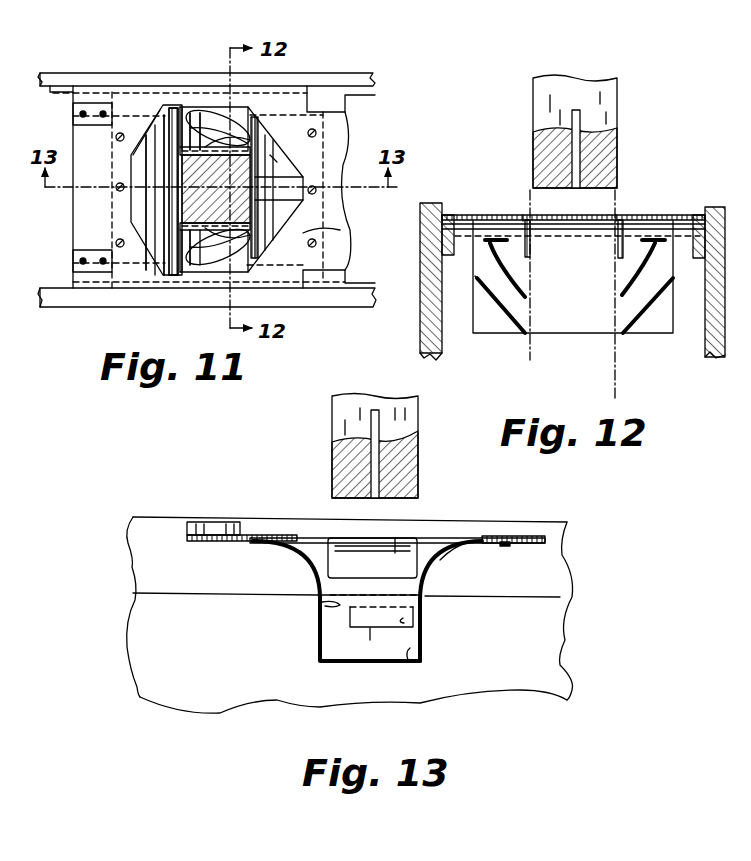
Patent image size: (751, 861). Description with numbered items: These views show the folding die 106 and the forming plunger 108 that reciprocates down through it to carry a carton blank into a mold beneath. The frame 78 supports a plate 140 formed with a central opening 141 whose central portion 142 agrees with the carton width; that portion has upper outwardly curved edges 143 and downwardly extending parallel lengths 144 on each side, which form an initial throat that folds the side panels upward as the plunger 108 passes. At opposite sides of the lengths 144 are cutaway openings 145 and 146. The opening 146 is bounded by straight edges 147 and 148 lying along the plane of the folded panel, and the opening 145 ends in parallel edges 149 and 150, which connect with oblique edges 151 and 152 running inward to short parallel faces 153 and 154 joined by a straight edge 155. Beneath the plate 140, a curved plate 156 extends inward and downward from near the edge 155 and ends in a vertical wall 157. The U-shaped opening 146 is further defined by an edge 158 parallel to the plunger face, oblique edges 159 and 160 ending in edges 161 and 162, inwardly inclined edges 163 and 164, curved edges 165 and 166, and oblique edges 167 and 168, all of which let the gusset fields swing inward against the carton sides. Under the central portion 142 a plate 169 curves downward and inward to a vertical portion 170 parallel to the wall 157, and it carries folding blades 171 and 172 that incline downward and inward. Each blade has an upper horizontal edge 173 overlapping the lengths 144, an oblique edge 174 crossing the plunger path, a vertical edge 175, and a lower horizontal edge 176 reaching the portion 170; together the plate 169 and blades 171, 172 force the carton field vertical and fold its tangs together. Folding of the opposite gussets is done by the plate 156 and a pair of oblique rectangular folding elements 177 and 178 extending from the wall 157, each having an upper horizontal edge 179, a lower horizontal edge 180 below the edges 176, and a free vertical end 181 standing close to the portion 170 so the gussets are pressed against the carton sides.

In FIG. 11, the frame 78 is at (335, 80).
In FIG. 11, the folding die 106 is at (298, 84).
In FIG. 11, the forming plunger 108 is at (240, 200).
In FIG. 12, the forming plunger 108 is at (608, 115).
In FIG. 13, the forming plunger 108 is at (405, 452).
In FIG. 11, the plate 140 is at (88, 205).
In FIG. 13, the plate 140 is at (212, 541).
In FIG. 11, the central opening 141 is at (303, 177).
In FIG. 13, the central opening 141 is at (450, 538).
In FIG. 11, the central portion of the opening 142 is at (285, 112).
In FIG. 12, the central portion of the opening 142 is at (618, 213).
In FIG. 12, the upper outwardly extending curved edge 143 is at (628, 218).
In FIG. 12, the downwardly extending parallel length 144 is at (612, 242).
In FIG. 13, the downwardly extending parallel length 144 is at (395, 553).
In FIG. 11, the cutaway opening 145 is at (145, 255).
In FIG. 12, the cutaway opening 145 is at (483, 214).
In FIG. 12, the cutaway opening 146 is at (665, 217).
In FIG. 11, the straight edge 147 is at (188, 125).
In FIG. 11, the straight edge 148 is at (180, 280).
In FIG. 11, the end edge 149 is at (178, 118).
In FIG. 11, the end edge 150 is at (172, 275).
In FIG. 11, the oblique edge 151 is at (150, 128).
In FIG. 11, the oblique edge 152 is at (155, 253).
In FIG. 11, the short parallel face 153 is at (128, 152).
In FIG. 11, the short parallel face 154 is at (130, 224).
In FIG. 11, the straight edge 155 is at (130, 173).
In FIG. 13, the curved plate 156 is at (297, 560).
In FIG. 13, the vertical wall 157 is at (320, 625).
In FIG. 11, the edge 158 is at (320, 190).
In FIG. 11, the oblique edge 159 is at (320, 233).
In FIG. 11, the oblique edge 160 is at (277, 162).
In FIG. 11, the edge 161 is at (240, 268).
In FIG. 11, the edge 162 is at (237, 107).
In FIG. 11, the inwardly inclined edge 163 is at (193, 262).
In FIG. 11, the inwardly inclined edge 164 is at (200, 130).
In FIG. 11, the curved edge 165 is at (185, 265).
In FIG. 11, the curved edge 166 is at (222, 110).
In FIG. 11, the oblique edge 167 is at (219, 247).
In FIG. 11, the oblique edge 168 is at (219, 128).
In FIG. 12, the plate 169 is at (640, 334).
In FIG. 13, the plate 169 is at (467, 548).
In FIG. 13, the vertical portion 170 is at (426, 637).
In FIG. 12, the folding blade 171 is at (640, 270).
In FIG. 13, the folding blade 171 is at (420, 618).
In FIG. 12, the folding blade 172 is at (500, 248).
In FIG. 13, the upper horizontal edge 173 is at (405, 564).
In FIG. 13, the oblique edge 174 is at (410, 595).
In FIG. 13, the vertical edge 175 is at (350, 628).
In FIG. 13, the horizontal edge 176 is at (375, 632).
In FIG. 12, the folding element 177 is at (655, 302).
In FIG. 12, the folding element 178 is at (510, 322).
In FIG. 12, the upper horizontal edge 179 is at (474, 278).
In FIG. 13, the upper horizontal edge 179 is at (320, 603).
In FIG. 13, the lower horizontal edge 180 is at (355, 664).
In FIG. 13, the free vertical end 181 is at (410, 655).